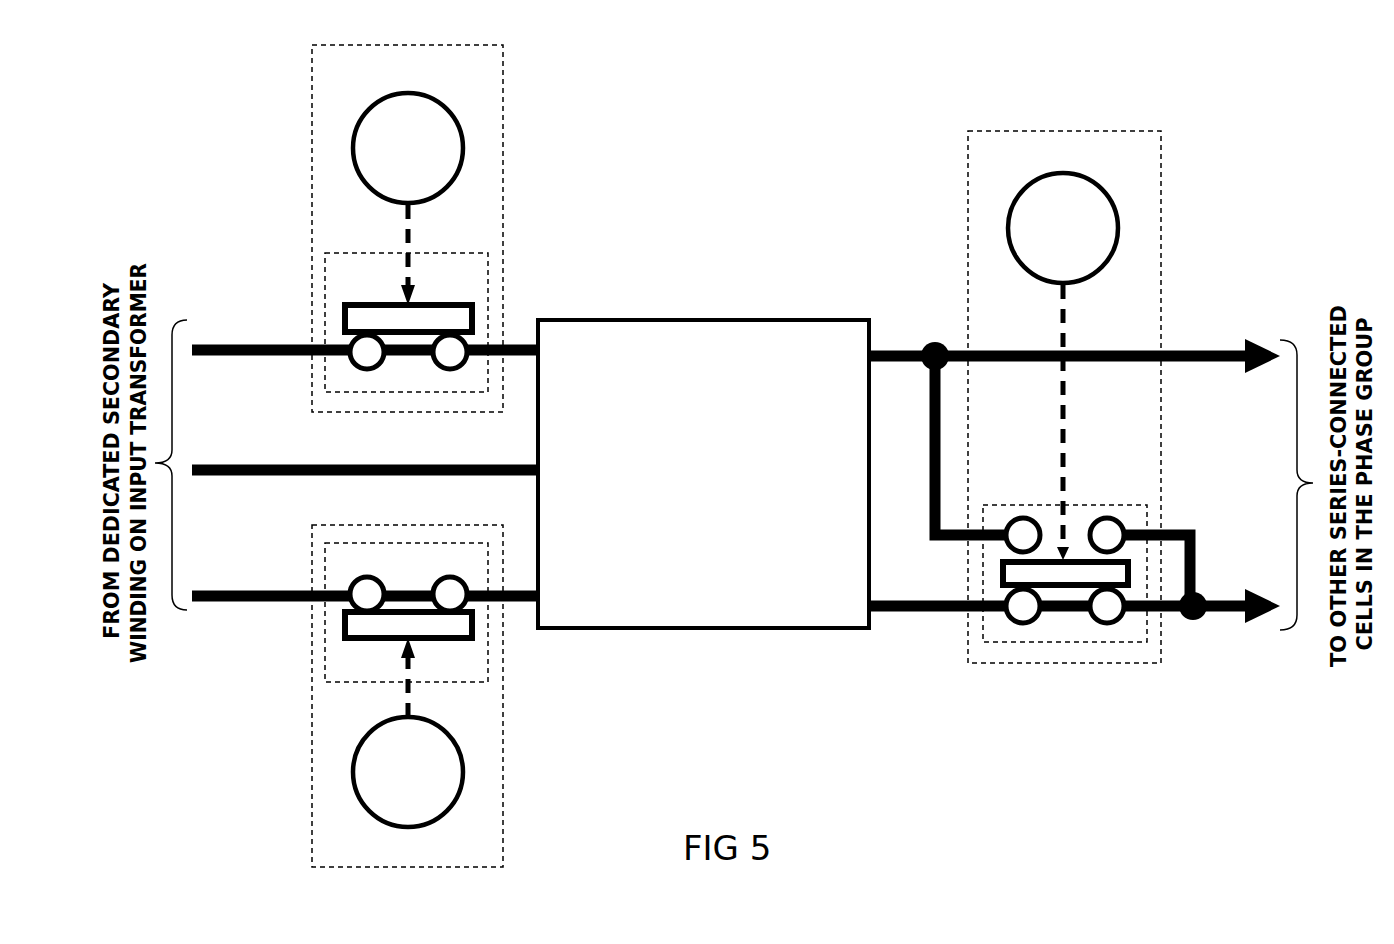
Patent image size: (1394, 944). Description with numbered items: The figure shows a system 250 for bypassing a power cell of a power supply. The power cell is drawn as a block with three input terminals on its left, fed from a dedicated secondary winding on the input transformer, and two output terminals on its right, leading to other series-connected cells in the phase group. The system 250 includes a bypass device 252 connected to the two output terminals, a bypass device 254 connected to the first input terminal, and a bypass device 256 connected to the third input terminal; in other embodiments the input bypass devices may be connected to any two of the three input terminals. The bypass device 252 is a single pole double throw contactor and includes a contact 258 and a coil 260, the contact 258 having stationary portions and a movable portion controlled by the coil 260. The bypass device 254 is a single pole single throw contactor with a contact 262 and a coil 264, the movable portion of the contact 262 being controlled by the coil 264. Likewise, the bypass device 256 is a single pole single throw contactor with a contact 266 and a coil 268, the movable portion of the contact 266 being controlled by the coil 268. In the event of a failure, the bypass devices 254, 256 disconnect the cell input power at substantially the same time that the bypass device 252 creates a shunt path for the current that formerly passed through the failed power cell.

The system 250 is at (1168, 80).
The bypass device 252 is at (1160, 185).
The bypass device 254 is at (312, 98).
The bypass device 256 is at (312, 826).
The contact 258 is at (1053, 645).
The coil 260 is at (1020, 185).
The contact 262 is at (462, 253).
The coil 264 is at (436, 97).
The contact 266 is at (457, 683).
The coil 268 is at (449, 810).